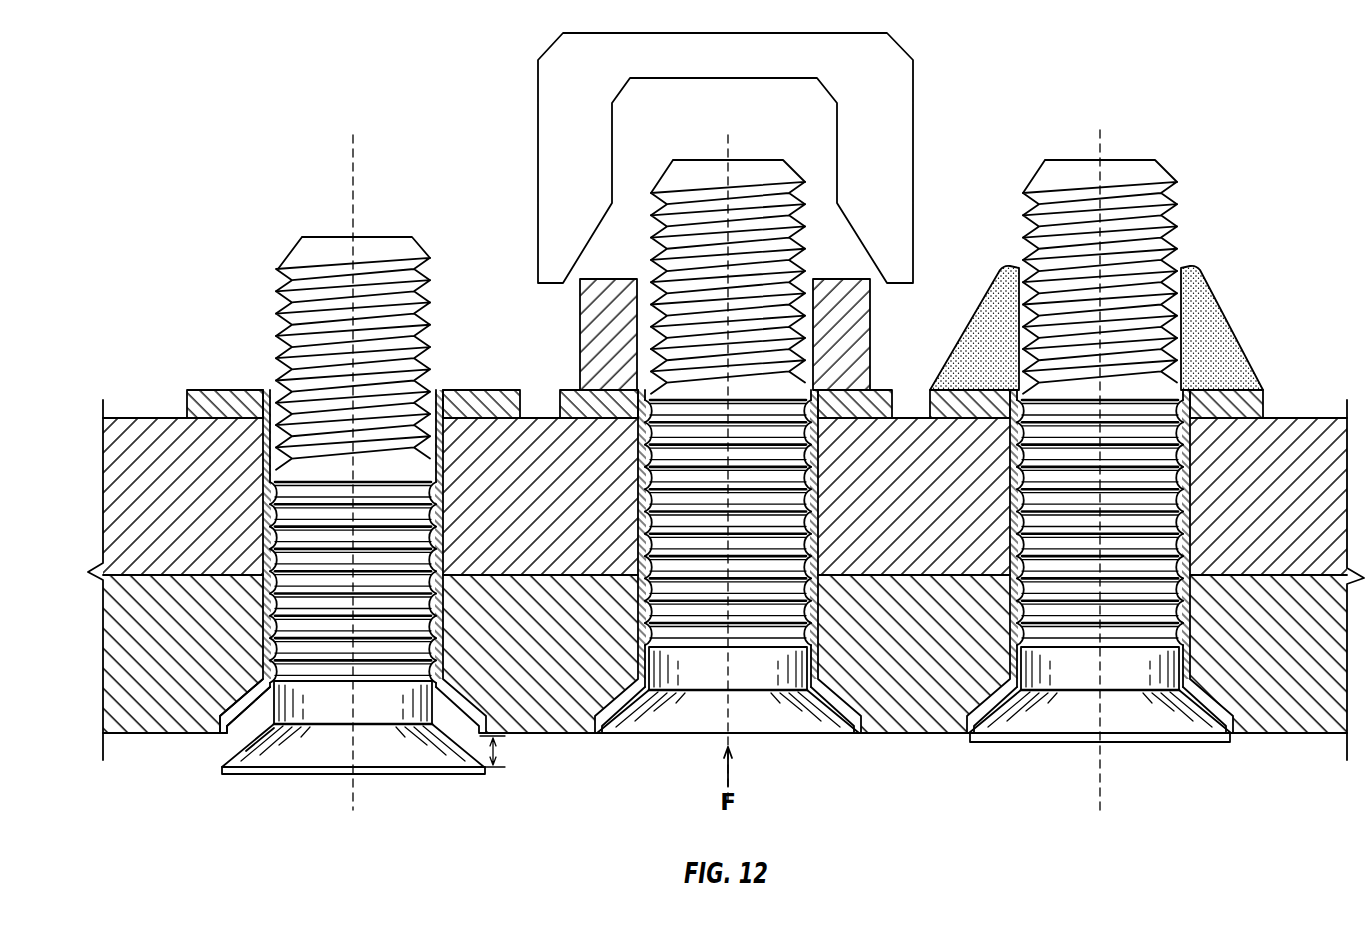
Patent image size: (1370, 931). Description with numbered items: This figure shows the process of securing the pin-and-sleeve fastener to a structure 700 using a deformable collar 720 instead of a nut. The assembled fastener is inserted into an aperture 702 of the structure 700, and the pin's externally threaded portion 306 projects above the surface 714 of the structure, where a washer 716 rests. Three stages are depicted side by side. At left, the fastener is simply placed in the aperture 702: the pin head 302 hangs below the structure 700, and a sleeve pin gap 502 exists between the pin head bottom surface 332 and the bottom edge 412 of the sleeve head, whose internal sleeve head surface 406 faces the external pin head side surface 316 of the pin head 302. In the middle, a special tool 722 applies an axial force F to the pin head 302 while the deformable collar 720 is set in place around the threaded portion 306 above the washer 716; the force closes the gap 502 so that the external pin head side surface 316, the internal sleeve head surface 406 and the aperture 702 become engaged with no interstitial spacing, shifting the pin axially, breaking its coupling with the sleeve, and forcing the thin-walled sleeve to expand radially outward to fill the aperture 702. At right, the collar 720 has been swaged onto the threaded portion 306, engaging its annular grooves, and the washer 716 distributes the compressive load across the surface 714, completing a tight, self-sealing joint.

The structure 700 is at (145, 488).
The aperture 702 is at (265, 615).
The surface of the structure 714 is at (152, 417).
The washer 716 is at (212, 392).
The deformable collar 720 is at (588, 333).
The special tool 722 is at (903, 78).
The externally threaded portion 306 is at (335, 358).
The pin head 302 is at (320, 762).
The pin head bottom surface 332 is at (386, 777).
The external pin head side surface 316 is at (243, 745).
The bottom edge of the sleeve head 412 is at (486, 728).
The internal sleeve head surface 406 is at (256, 712).
The sleeve pin gap 502 is at (497, 752).